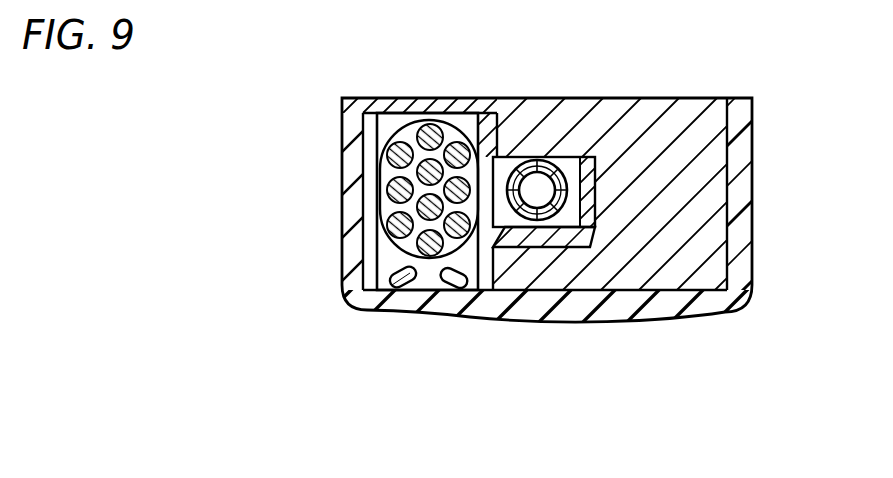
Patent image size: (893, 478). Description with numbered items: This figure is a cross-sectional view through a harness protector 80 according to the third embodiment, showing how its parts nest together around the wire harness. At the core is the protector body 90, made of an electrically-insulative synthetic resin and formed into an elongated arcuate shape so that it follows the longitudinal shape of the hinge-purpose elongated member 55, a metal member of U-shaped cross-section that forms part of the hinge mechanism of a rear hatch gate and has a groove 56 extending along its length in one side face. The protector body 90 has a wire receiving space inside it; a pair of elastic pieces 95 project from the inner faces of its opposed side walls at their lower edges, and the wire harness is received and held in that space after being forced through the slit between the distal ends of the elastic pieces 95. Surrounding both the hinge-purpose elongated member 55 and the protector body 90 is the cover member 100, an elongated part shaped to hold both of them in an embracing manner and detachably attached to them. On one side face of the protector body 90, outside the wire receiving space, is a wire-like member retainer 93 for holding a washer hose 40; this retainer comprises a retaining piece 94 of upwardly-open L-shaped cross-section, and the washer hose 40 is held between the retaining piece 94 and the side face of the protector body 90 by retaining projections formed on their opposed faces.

The harness protector 80 is at (326, 97).
The cover member 100 is at (360, 222).
The hinge-purpose elongated member 55 is at (699, 98).
The protector body 90 is at (364, 140).
The retaining piece 94 is at (595, 212).
The groove 56 is at (579, 200).
The washer hose 40 is at (540, 155).
The wire-like member retainer 93 is at (565, 240).
The elastic pieces 95 is at (408, 281).